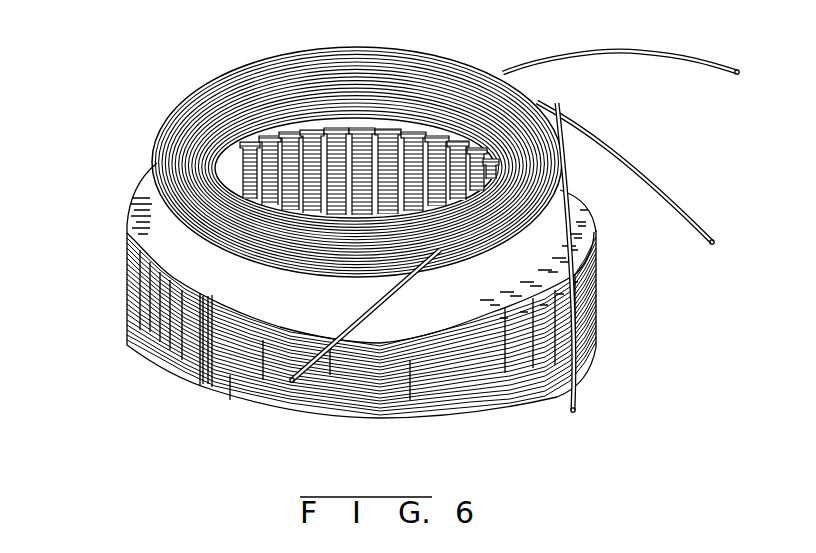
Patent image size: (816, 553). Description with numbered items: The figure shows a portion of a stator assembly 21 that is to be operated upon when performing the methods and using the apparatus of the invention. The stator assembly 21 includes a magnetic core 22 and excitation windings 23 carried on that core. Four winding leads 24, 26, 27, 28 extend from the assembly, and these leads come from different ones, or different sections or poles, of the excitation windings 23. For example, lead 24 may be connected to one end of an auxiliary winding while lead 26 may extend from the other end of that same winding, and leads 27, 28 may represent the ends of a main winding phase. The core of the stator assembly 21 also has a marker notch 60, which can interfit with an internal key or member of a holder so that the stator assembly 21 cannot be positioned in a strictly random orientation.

The stator assembly 21 is at (312, 231).
The magnetic core 22 is at (243, 384).
The excitation windings 23 is at (370, 48).
The winding lead 24 is at (702, 57).
The winding lead 26 is at (698, 211).
The winding lead 27 is at (578, 386).
The winding lead 28 is at (333, 350).
The marker notch 60 is at (207, 386).